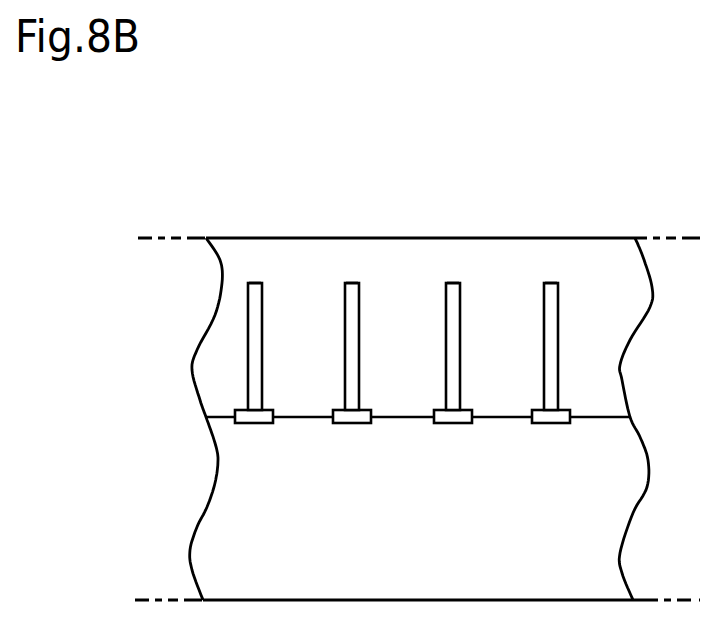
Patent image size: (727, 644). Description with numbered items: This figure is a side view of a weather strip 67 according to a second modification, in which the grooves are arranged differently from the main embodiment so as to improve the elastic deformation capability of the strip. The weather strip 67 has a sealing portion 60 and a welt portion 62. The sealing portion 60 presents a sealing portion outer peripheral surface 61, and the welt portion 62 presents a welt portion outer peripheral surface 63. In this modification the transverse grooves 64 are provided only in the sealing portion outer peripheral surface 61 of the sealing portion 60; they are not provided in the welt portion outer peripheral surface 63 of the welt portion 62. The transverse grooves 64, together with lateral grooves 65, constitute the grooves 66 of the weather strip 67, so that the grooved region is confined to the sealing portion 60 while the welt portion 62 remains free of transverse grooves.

The sealing portion 60 is at (212, 263).
The sealing portion outer peripheral surface 61 is at (230, 333).
The welt portion 62 is at (215, 445).
The welt portion outer peripheral surface 63 is at (232, 520).
The transverse grooves 64 is at (262, 337).
The lateral grooves 65 is at (274, 410).
The grooves 66 is at (254, 280).
The weather strip 67 is at (202, 221).